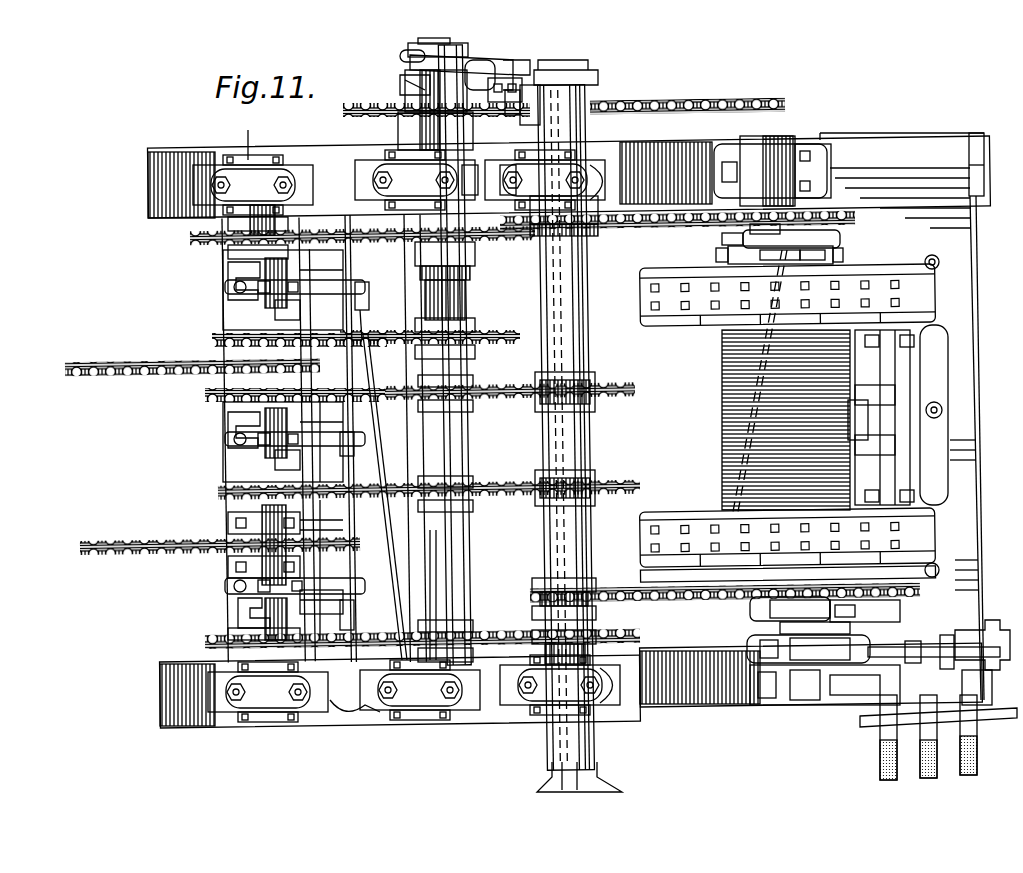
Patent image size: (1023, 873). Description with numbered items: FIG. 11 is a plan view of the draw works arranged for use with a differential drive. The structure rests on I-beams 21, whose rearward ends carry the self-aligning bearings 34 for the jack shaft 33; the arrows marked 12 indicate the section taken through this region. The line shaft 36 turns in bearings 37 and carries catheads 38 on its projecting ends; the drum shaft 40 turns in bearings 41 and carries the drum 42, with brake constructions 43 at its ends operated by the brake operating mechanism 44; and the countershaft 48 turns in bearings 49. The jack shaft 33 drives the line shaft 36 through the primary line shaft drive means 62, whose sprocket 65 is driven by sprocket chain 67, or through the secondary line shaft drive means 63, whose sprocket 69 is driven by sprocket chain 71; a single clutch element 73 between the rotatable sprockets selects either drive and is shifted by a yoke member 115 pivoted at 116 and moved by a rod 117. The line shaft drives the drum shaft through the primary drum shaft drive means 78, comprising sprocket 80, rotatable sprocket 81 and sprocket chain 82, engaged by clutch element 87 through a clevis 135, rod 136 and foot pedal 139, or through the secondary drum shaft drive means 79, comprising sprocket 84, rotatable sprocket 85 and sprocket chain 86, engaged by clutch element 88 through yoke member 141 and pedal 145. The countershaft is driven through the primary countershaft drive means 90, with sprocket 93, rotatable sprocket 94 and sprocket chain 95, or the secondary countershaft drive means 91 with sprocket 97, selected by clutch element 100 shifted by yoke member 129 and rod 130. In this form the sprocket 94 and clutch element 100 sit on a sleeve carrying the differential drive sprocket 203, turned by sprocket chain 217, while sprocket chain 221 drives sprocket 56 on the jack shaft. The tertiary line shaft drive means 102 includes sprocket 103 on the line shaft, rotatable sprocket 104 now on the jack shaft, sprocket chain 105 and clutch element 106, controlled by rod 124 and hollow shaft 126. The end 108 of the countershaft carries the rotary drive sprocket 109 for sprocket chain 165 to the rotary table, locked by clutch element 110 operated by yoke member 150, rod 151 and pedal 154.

The I-beam 21 is at (150, 178).
The bearings 34 is at (232, 168).
The drive shaft and chain 12 is at (240, 137).
The clutch element 110 is at (402, 54).
The end of countershaft 108 is at (420, 78).
The yoke member 150 is at (485, 62).
The catheads 38 is at (596, 82).
The sprocket chain 165 is at (760, 98).
The rotary drive sprocket 109 is at (400, 128).
The bearings 49 is at (385, 172).
The bearings 37 is at (560, 176).
The drum shaft 40 is at (780, 138).
The bearings 41 is at (805, 146).
The sprocket chain 95 is at (378, 218).
The sprocket 94 is at (222, 232).
The sprocket chain 82 is at (612, 230).
The primary drum shaft drive means 78 is at (668, 234).
The clevis 135 is at (722, 252).
The sprocket 81 is at (835, 222).
The clutch element 87 is at (830, 244).
The clutch element 100 is at (209, 274).
The primary countershaft drive means 90 is at (358, 256).
The sprocket 93 is at (465, 250).
The yoke member 129 is at (283, 290).
The rod 151 is at (552, 285).
The sprocket 80 is at (582, 270).
The brake constructions 43 is at (640, 300).
The line shaft 36 is at (585, 318).
The secondary countershaft drive means 91 is at (408, 316).
The sprocket 97 is at (465, 322).
The sprocket chain 217 is at (108, 360).
The differential drive sprocket 203 is at (240, 352).
The rod 130 is at (372, 358).
The primary line shaft drive means 62 is at (524, 380).
The drum 42 is at (738, 368).
The brake operating mechanism 44 is at (964, 397).
The pivot 116 is at (335, 418).
The sprocket chain 67 is at (484, 398).
The sprocket 65 is at (596, 400).
The clutch element 73 is at (214, 430).
The countershaft 48 is at (462, 462).
The yoke member 115 is at (324, 442).
The secondary line shaft drive means 63 is at (518, 485).
The sprocket 69 is at (595, 472).
The rod 136 is at (730, 460).
The sprocket chain 71 is at (484, 500).
The sprocket chain 221 is at (130, 540).
The sprocket 56 is at (240, 535).
The rod 117 is at (360, 520).
The sprocket 84 is at (535, 580).
The sprocket chain 86 is at (622, 588).
The clutch element 106 is at (232, 600).
The sprocket chain 105 is at (466, 598).
The tertiary line shaft drive means 102 is at (516, 626).
The sprocket 103 is at (596, 600).
The jack shaft 33 is at (240, 612).
The sprocket 104 is at (238, 650).
The rod 124 is at (365, 612).
The sprocket 85 is at (860, 606).
The hollow shaft 126 is at (935, 642).
The clutch element 88 is at (852, 630).
The secondary drum shaft drive means 79 is at (667, 614).
The yoke member 141 is at (750, 640).
The pedal 145 is at (878, 766).
The foot pedal 139 is at (928, 778).
The pedal 154 is at (968, 776).